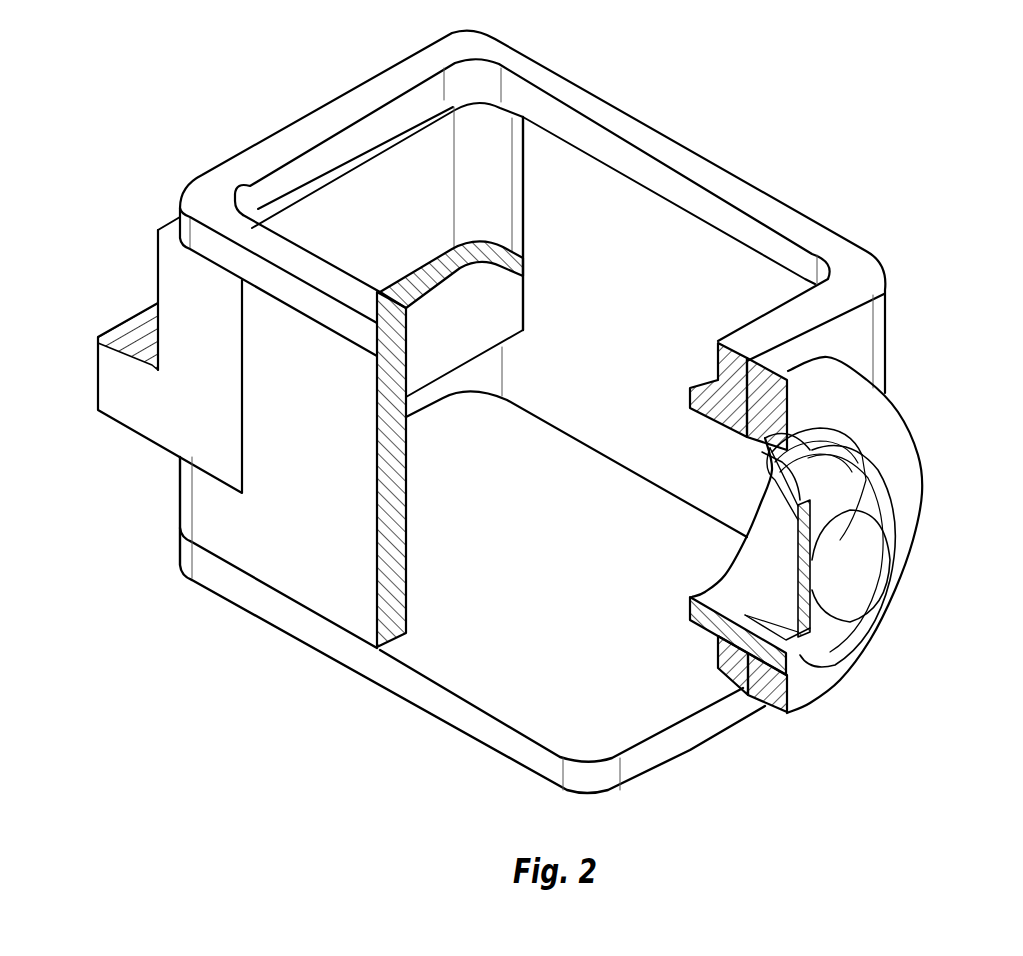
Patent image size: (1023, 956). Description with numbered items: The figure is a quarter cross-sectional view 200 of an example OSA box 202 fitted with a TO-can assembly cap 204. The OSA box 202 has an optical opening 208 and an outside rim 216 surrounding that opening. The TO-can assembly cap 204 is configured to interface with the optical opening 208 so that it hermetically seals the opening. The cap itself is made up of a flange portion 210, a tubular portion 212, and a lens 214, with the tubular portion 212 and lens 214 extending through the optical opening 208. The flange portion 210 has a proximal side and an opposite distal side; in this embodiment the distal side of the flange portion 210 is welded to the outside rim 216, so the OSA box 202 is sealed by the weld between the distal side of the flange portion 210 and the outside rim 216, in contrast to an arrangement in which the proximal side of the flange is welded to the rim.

The quarter cross-sectional view 200 is at (548, 411).
The OSA box 202 is at (342, 668).
The TO-can assembly cap 204 is at (843, 607).
The optical opening 208 is at (757, 560).
The flange portion 210 is at (748, 617).
The tubular portion 212 is at (883, 483).
The lens 214 is at (823, 563).
The outside rim 216 is at (777, 682).